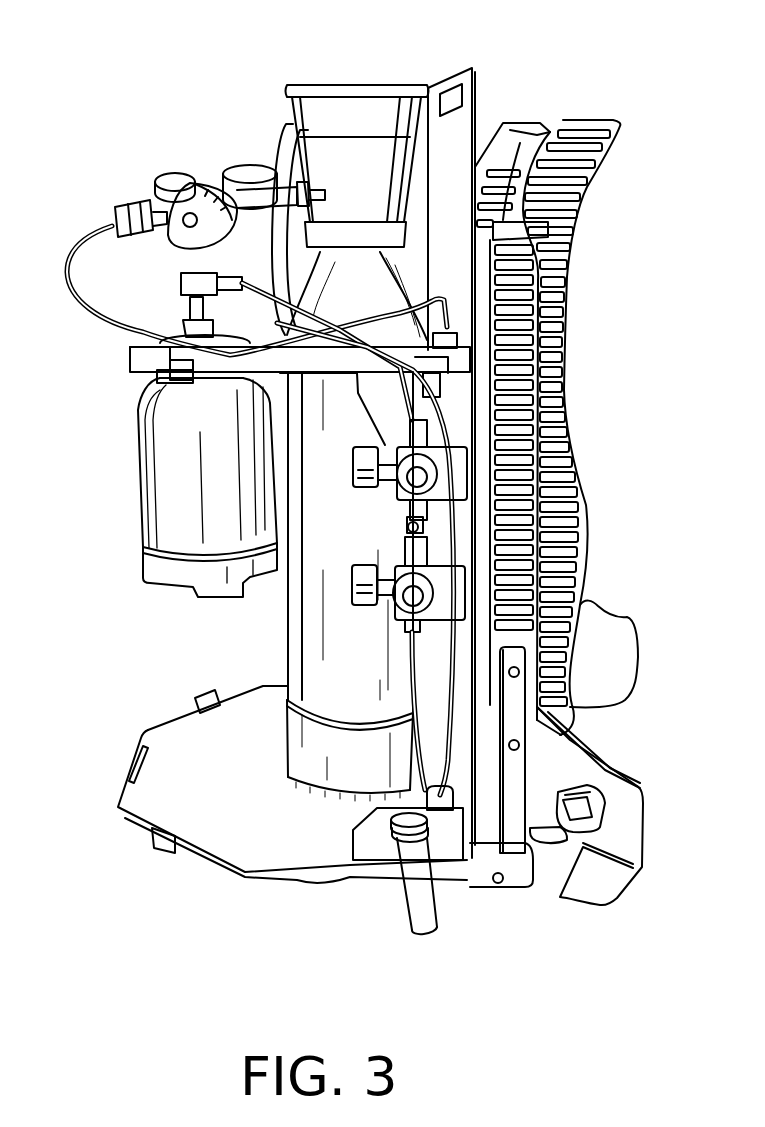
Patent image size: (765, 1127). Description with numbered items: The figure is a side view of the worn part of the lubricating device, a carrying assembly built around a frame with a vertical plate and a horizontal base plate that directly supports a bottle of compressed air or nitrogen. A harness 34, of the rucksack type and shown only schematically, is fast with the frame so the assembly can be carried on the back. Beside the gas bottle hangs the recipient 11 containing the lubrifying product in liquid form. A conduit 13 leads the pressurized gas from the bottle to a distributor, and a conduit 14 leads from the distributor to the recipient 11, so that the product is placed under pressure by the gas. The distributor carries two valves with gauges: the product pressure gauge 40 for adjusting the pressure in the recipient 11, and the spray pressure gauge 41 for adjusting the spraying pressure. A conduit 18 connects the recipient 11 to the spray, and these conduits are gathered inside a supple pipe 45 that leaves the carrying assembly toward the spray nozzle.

The harness 34 is at (588, 122).
The conduit 14 is at (290, 158).
The conduit 18 is at (470, 360).
The recipient 11 is at (180, 435).
The product pressure gauge 40 is at (415, 478).
The spray pressure gauge 41 is at (395, 612).
The conduit 13 is at (445, 762).
The supple pipe 45 is at (413, 902).